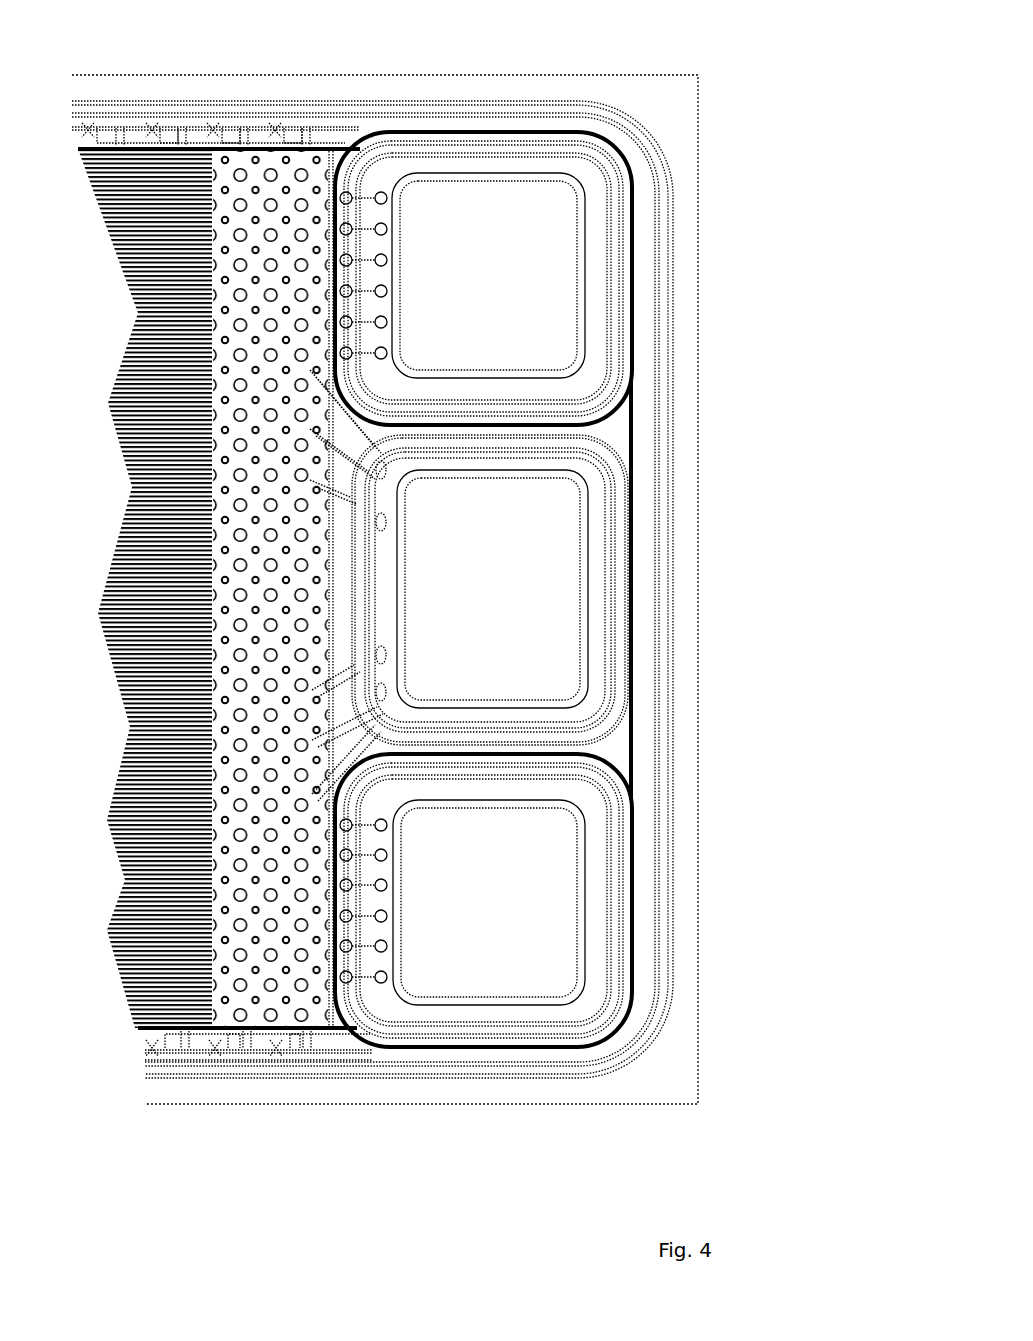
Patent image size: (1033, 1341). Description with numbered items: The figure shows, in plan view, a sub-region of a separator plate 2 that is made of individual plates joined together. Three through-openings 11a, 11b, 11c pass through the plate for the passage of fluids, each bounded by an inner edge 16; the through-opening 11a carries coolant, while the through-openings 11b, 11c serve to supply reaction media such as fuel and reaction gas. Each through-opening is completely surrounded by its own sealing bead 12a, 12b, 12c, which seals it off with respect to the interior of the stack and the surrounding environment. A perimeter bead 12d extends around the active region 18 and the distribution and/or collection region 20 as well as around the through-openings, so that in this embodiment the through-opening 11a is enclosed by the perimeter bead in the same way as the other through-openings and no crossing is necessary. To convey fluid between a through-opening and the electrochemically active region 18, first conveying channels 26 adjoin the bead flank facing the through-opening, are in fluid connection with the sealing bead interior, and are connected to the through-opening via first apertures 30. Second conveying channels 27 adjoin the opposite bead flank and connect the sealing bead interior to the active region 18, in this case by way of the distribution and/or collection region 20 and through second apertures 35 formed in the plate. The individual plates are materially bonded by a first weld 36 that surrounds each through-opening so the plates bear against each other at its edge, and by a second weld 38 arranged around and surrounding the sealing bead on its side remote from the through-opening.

The separator plate 2 is at (487, 88).
The electrochemically active region 18 is at (188, 172).
The distribution and/or collection region 20 is at (298, 165).
The second aperture 35 is at (344, 194).
The second conveying channels 27 is at (352, 196).
The second weld 38 is at (612, 150).
The first aperture 30 is at (387, 200).
The inner edge 16 is at (570, 238).
The through-opening 11b is at (567, 278).
The through-opening 11a is at (575, 590).
The through-opening 11c is at (564, 900).
The first conveying channels 26 is at (389, 502).
The first weld 36 is at (585, 302).
The sealing bead 12b is at (612, 265).
The sealing bead 12a is at (615, 555).
The sealing bead 12c is at (612, 882).
The perimeter bead 12d is at (430, 1070).